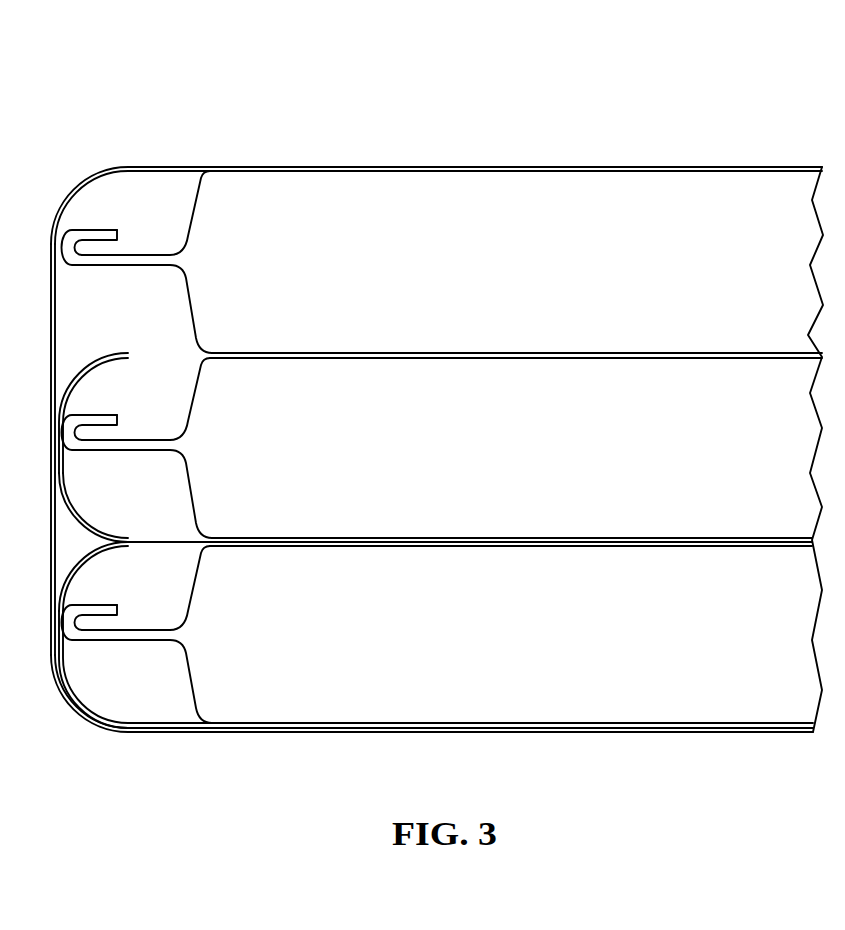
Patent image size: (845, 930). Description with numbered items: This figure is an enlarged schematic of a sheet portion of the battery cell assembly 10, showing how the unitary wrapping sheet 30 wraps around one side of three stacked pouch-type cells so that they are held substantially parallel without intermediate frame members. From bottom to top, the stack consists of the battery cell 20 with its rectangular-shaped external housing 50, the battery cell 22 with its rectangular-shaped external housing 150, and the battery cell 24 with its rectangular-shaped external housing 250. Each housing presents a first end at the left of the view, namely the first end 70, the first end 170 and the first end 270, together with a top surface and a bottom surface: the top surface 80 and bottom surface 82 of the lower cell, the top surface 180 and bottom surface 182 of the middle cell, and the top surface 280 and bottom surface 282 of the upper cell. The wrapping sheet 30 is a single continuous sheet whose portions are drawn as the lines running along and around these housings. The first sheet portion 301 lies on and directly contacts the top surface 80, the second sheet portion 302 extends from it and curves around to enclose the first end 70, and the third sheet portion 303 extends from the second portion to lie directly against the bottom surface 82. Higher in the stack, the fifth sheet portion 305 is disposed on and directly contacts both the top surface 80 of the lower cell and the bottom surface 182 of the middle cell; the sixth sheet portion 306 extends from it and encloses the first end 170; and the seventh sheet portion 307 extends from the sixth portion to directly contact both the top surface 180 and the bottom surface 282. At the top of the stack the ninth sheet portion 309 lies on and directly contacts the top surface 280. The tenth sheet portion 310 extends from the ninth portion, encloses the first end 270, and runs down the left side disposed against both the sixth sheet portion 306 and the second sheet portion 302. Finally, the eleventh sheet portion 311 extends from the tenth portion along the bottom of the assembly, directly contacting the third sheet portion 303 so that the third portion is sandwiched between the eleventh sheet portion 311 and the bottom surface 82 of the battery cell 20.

The battery cell assembly 10 is at (434, 98).
The unitary wrapping sheet 30 is at (672, 155).
The battery cell 20 is at (437, 634).
The battery cell 22 is at (441, 448).
The battery cell 24 is at (441, 262).
The rectangular-shaped external housing 50 is at (432, 665).
The rectangular-shaped external housing 150 is at (435, 486).
The rectangular-shaped external housing 250 is at (386, 411).
The first end 70 is at (61, 625).
The first end 170 is at (61, 435).
The first end 270 is at (61, 250).
The top surface 80 is at (500, 723).
The bottom surface 82 is at (500, 546).
The top surface 180 is at (522, 358).
The bottom surface 182 is at (520, 538).
The top surface 280 is at (622, 171).
The bottom surface 282 is at (622, 353).
The first sheet portion 301 is at (283, 546).
The second sheet portion 302 is at (84, 566).
The third sheet portion 303 is at (268, 723).
The fifth sheet portion 305 is at (268, 538).
The sixth sheet portion 306 is at (90, 528).
The seventh sheet portion 307 is at (330, 353).
The ninth sheet portion 309 is at (327, 171).
The tenth sheet portion 310 is at (56, 329).
The eleventh sheet portion 311 is at (283, 733).